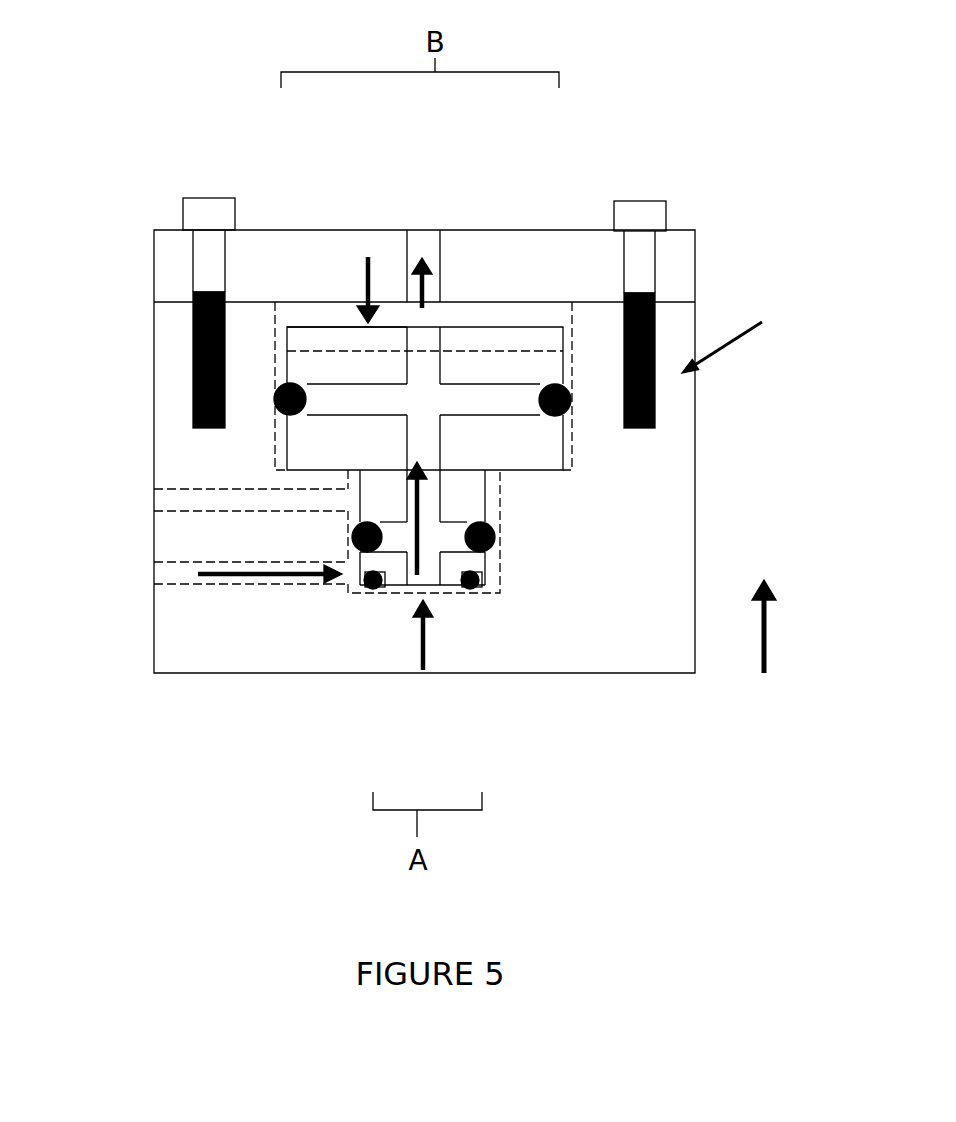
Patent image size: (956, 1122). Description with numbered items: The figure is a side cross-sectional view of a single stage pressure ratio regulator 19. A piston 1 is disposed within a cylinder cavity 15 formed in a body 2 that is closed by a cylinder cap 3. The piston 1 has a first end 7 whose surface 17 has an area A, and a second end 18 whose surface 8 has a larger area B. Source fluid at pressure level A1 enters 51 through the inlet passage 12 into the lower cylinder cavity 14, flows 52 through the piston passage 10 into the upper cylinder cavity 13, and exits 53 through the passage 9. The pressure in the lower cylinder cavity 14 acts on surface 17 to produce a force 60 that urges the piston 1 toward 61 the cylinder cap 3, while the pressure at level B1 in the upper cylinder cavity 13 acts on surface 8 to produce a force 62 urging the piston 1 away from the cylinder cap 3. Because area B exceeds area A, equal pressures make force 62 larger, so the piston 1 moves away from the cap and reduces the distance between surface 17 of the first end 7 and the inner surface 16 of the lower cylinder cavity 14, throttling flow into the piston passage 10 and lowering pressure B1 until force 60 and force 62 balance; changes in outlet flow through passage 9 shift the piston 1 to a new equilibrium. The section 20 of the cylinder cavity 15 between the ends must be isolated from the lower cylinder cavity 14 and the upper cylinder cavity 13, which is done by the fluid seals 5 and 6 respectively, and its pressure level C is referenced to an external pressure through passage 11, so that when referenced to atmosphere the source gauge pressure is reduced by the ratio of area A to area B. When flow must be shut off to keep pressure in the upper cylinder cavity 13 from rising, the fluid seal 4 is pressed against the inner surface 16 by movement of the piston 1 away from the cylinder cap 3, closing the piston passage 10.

The piston 1 is at (540, 432).
The body 2 is at (647, 610).
The cylinder cap 3 is at (508, 258).
The fluid seal 4 is at (485, 590).
The fluid seal 5 is at (497, 540).
The fluid seal 6 is at (570, 409).
The first end 7 is at (397, 565).
The surface 8 is at (337, 325).
The passage 9 is at (420, 242).
The piston passage 10 is at (420, 442).
The passage 11 is at (165, 500).
The inlet passage 12 is at (163, 573).
The upper cylinder cavity 13 is at (525, 317).
The lower cylinder cavity 14 is at (422, 588).
The cylinder cavity 15 is at (567, 462).
The inner surface 16 is at (458, 597).
The surface 17 is at (393, 583).
The second end 18 is at (303, 368).
The single stage pressure ratio regulator 19 is at (737, 336).
The section of cylinder cavity 20 is at (353, 515).
The fluid entry flow 51 is at (283, 577).
The flow through piston passage 52 is at (420, 505).
The exit flow 53 is at (423, 288).
The force 60 is at (428, 645).
The direction toward cylinder cap 61 is at (760, 638).
The force 62 is at (335, 327).